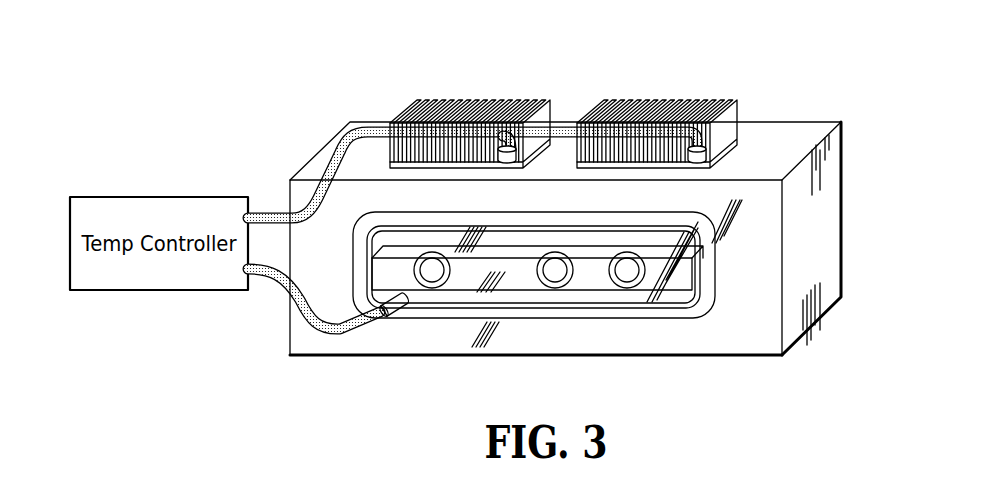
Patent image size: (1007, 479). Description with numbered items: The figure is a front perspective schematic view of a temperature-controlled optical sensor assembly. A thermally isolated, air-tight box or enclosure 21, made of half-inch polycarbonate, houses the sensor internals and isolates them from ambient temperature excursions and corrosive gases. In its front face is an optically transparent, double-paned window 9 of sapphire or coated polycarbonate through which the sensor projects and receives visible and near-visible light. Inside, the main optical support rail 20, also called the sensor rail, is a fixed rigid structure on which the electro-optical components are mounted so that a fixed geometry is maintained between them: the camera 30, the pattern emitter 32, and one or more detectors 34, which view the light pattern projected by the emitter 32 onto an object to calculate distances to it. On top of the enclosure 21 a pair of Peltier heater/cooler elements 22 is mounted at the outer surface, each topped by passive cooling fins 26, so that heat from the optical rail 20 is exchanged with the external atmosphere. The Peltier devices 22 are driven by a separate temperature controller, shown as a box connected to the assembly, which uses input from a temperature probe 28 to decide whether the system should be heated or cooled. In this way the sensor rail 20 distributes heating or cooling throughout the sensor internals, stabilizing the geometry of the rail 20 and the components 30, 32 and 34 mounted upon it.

The optically transparent window 9 is at (687, 308).
The main optical support rail 20 is at (682, 277).
The enclosure 21 is at (841, 243).
The Peltier heater/cooler element 22 is at (514, 152).
The passive cooling fins 26 is at (473, 100).
The temperature probe 28 is at (402, 310).
The camera 30 is at (548, 290).
The emitter 32 is at (428, 290).
The detector 34 is at (620, 290).